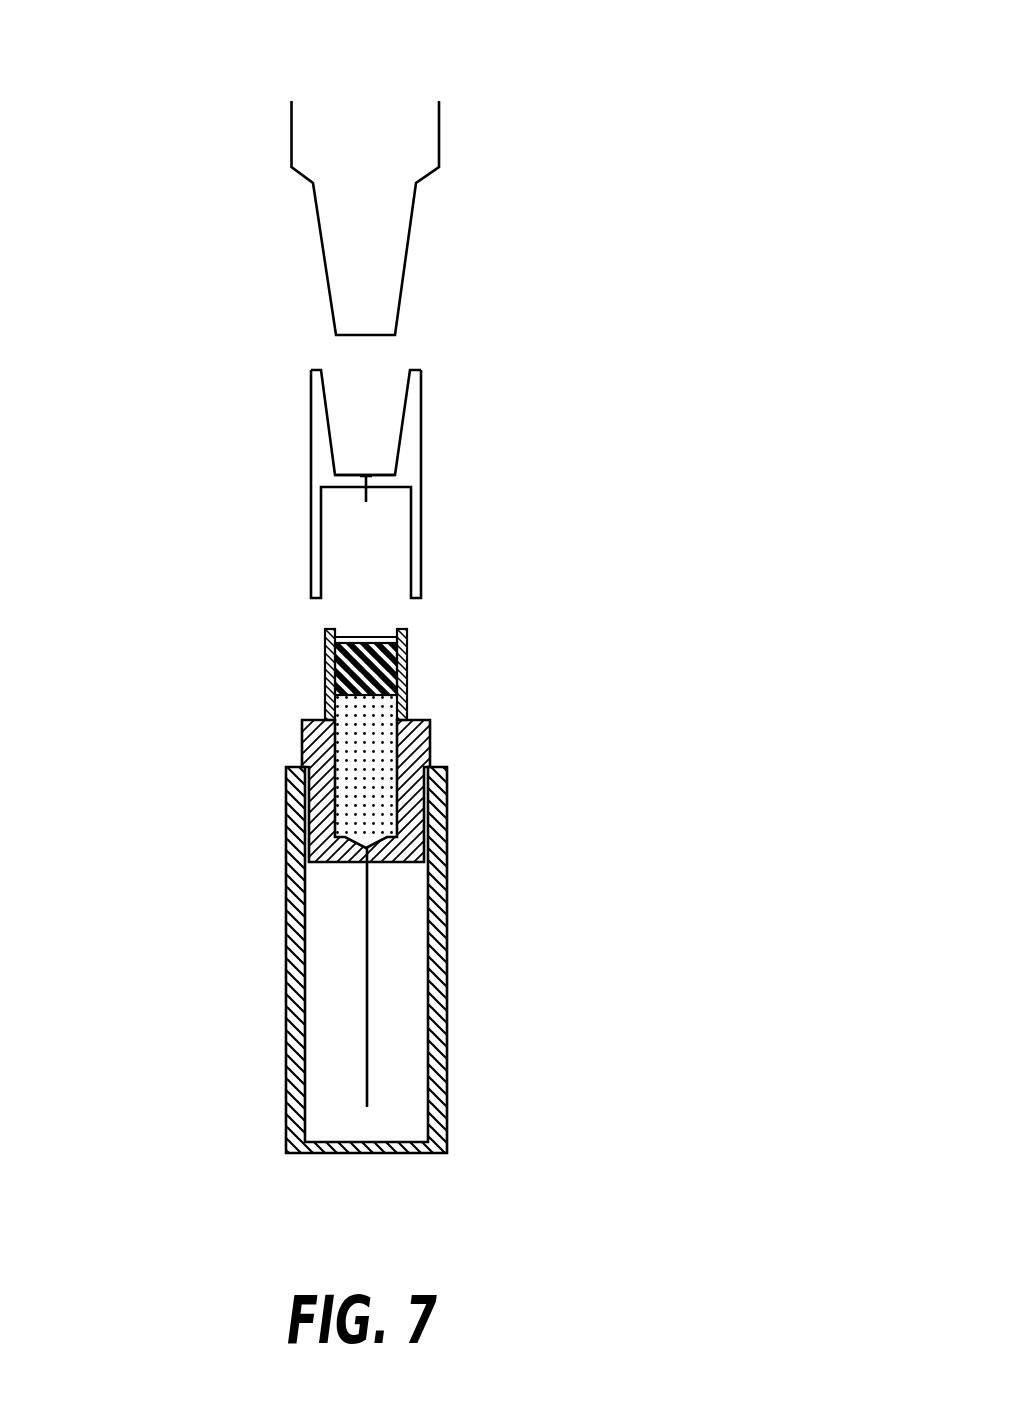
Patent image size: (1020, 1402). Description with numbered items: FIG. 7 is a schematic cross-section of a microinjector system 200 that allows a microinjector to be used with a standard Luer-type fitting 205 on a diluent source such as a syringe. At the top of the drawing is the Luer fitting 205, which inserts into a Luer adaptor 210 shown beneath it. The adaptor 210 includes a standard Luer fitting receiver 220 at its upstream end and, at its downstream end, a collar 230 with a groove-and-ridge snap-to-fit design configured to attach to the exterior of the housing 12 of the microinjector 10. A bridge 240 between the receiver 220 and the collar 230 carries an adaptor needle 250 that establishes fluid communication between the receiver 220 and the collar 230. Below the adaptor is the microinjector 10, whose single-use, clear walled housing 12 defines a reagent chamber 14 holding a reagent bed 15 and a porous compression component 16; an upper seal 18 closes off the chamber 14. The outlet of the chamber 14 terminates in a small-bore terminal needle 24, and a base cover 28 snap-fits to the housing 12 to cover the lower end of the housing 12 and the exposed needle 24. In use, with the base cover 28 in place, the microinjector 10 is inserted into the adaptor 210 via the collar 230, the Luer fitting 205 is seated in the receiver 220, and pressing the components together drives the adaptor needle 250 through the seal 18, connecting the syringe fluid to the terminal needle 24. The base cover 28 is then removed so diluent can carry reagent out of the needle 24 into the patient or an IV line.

The microinjector system 200 is at (676, 89).
The Luer fitting 205 is at (273, 239).
The Luer adaptor 210 is at (355, 476).
The Luer fitting receiver 220 is at (407, 403).
The collar 230 is at (422, 577).
The bridge 240 is at (382, 476).
The adaptor needle 250 is at (366, 493).
The microinjection device 10 is at (365, 882).
The housing 12 is at (325, 670).
The reagent chamber 14 is at (372, 758).
The reagent bed 15 is at (353, 745).
The porous compression component 16 is at (408, 665).
The upper seal 18 is at (368, 635).
The terminal needle 24 is at (369, 955).
The base cover 28 is at (440, 1028).